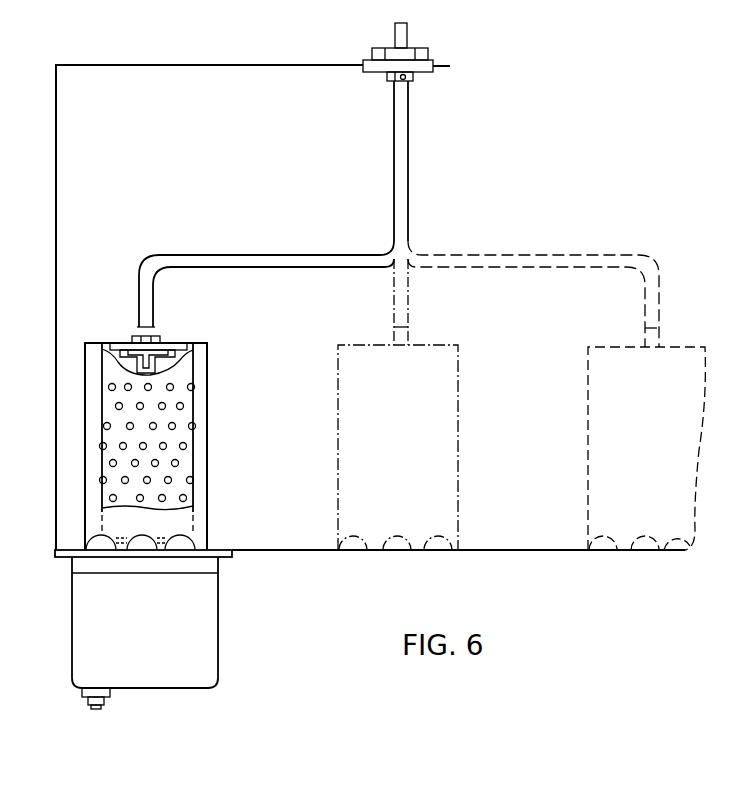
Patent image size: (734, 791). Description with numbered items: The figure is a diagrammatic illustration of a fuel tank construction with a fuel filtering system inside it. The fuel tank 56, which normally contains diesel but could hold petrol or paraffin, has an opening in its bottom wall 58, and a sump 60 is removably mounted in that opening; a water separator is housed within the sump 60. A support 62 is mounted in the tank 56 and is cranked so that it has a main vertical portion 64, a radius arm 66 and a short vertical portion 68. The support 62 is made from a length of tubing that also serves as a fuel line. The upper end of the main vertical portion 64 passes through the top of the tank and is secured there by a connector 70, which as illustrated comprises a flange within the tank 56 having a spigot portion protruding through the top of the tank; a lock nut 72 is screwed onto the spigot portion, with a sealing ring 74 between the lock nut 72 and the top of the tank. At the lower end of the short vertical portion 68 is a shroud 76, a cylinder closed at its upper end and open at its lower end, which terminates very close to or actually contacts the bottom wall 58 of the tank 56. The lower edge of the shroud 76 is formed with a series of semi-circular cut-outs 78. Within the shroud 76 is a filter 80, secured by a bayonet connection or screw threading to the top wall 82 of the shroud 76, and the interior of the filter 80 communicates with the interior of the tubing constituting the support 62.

The fuel tank 56 is at (241, 62).
The bottom wall 58 is at (470, 552).
The sump 60 is at (219, 633).
The support 62 is at (409, 213).
The main vertical portion 64 is at (394, 198).
The radius arm 66 is at (268, 255).
The short vertical portion 68 is at (153, 312).
The connector 70 is at (411, 49).
The lock nut 72 is at (373, 50).
The sealing ring 74 is at (433, 50).
The shroud 76 is at (208, 398).
The cut-outs 78 is at (206, 548).
The filter 80 is at (193, 458).
The top wall 82 is at (182, 343).